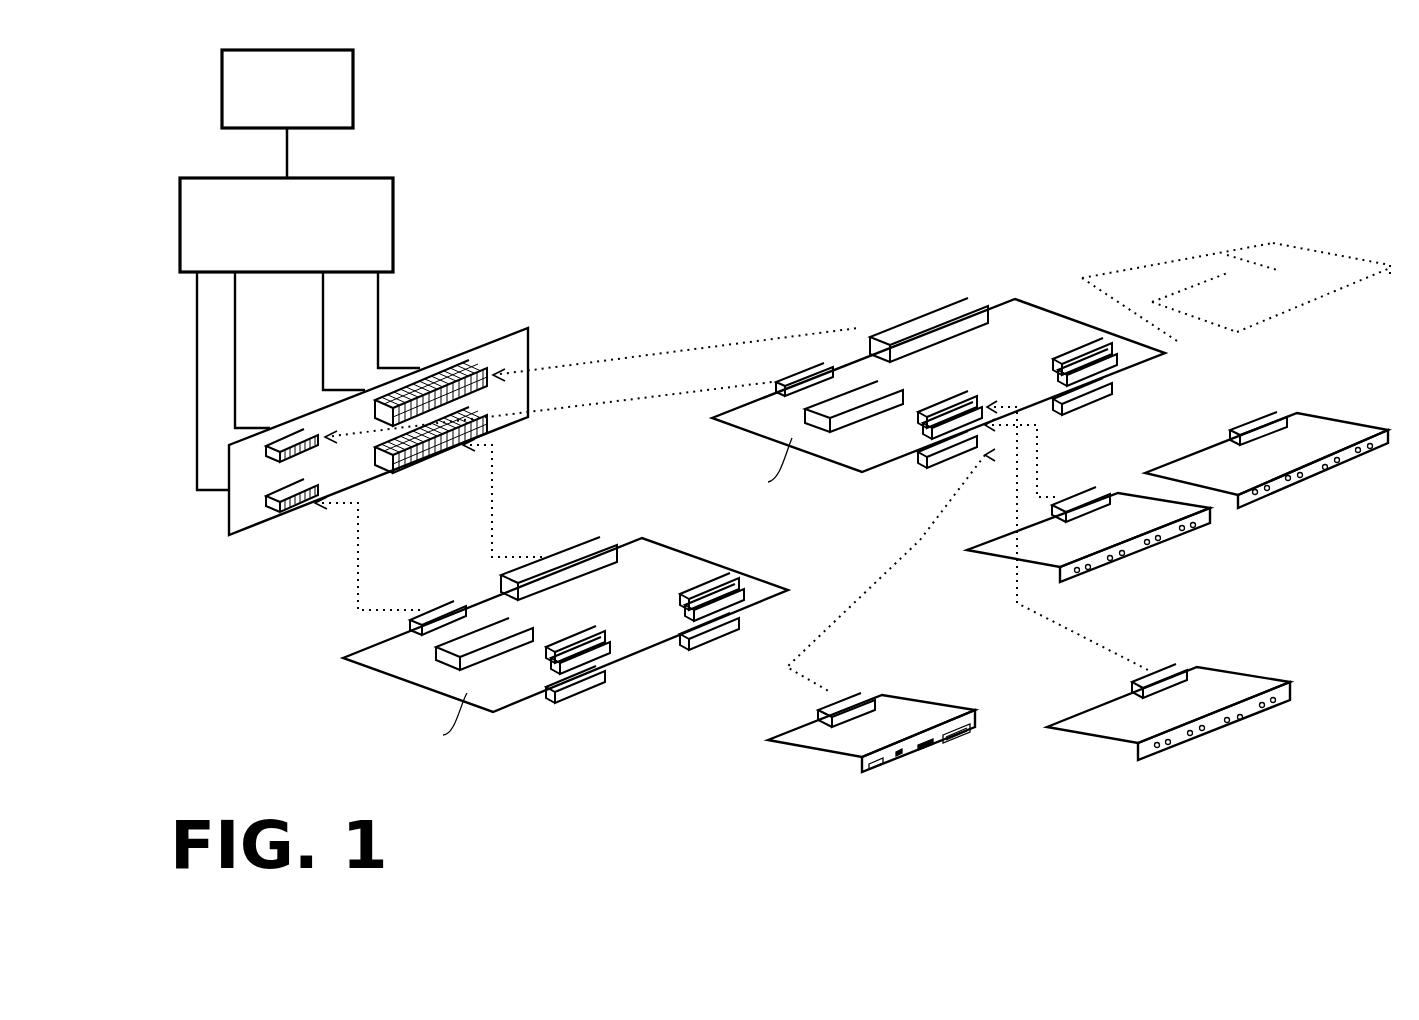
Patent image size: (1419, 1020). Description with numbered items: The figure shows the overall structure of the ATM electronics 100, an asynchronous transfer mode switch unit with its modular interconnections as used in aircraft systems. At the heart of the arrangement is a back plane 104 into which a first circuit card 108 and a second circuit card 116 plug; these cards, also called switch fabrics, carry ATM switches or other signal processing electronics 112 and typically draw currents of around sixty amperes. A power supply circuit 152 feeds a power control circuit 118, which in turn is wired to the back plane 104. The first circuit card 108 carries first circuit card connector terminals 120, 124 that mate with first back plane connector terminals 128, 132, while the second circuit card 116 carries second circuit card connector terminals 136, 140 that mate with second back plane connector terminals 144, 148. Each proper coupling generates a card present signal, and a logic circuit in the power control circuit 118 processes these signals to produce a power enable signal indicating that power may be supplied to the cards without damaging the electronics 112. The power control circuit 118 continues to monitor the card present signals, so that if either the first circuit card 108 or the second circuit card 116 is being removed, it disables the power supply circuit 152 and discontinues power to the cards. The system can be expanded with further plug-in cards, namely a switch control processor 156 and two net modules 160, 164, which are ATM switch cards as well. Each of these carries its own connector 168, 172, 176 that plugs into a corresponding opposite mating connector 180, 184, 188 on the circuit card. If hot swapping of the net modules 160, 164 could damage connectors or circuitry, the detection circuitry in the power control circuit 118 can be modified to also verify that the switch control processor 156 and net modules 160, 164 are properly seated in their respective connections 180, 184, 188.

The ATM electronics 100 is at (718, 184).
The back plane 104 is at (513, 327).
The first circuit card 108 is at (1014, 300).
The signal processing electronics 112 is at (892, 378).
The second circuit card 116 is at (702, 558).
The power control circuit 118 is at (395, 215).
The first circuit card connector terminal 120 is at (803, 368).
The first circuit card connector terminal 124 is at (950, 313).
The first back plane connector terminal 128 is at (297, 435).
The first back plane connector terminal 132 is at (440, 373).
The second circuit card connector terminal 136 is at (445, 607).
The second circuit card connector terminal 140 is at (568, 555).
The second back plane connector terminal 144 is at (266, 508).
The second back plane connector terminal 148 is at (377, 466).
The power supply circuit 152 is at (357, 88).
The switch control processor 156 is at (908, 712).
The net module 160 is at (1002, 552).
The net module 164 is at (1312, 443).
The connector 168 is at (857, 697).
The connector 172 is at (1090, 497).
The connector 176 is at (1247, 417).
The mating connector 180 is at (927, 462).
The mating connector 184 is at (923, 433).
The mating connector 188 is at (1117, 363).